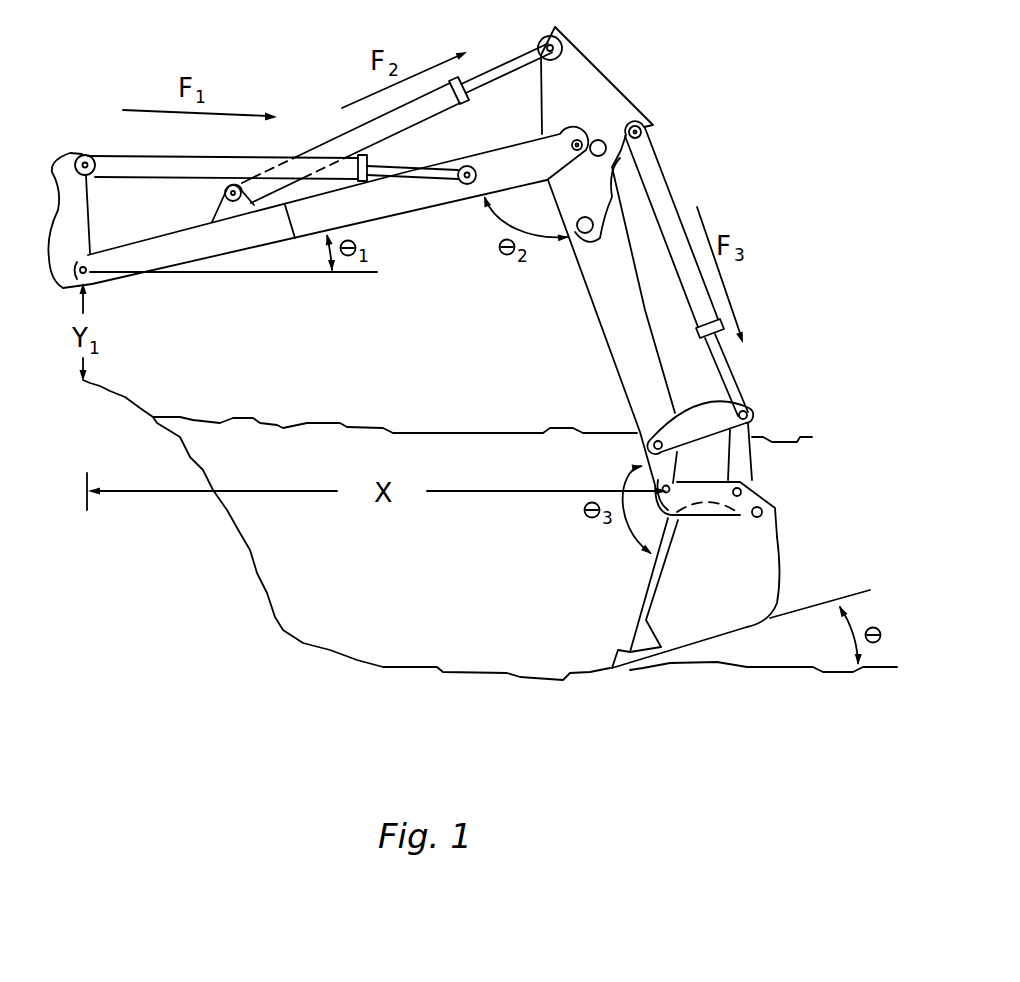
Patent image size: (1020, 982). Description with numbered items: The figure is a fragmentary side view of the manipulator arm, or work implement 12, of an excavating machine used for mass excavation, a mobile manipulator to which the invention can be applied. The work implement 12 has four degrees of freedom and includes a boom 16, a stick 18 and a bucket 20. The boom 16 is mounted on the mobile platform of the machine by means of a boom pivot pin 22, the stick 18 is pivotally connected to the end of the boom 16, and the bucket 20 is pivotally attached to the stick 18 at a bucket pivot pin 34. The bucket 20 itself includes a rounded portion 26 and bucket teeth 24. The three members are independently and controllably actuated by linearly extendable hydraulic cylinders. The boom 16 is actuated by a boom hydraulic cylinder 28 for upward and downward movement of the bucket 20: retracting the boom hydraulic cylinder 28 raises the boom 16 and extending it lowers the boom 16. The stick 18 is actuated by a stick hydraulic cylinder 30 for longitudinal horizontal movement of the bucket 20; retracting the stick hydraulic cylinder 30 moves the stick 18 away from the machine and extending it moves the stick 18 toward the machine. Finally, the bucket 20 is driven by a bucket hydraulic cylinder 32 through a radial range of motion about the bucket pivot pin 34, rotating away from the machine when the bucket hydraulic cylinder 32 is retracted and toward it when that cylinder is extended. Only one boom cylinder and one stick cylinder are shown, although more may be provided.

The work implement 12 is at (492, 283).
The boom 16 is at (375, 205).
The stick 18 is at (625, 333).
The bucket 20 is at (687, 595).
The boom pivot pin 22 is at (90, 277).
The bucket teeth 24 is at (615, 655).
The rounded portion 26 is at (763, 568).
The boom hydraulic cylinder 28 is at (175, 167).
The stick hydraulic cylinder 30 is at (422, 108).
The bucket hydraulic cylinder 32 is at (653, 183).
The bucket pivot pin 34 is at (657, 480).